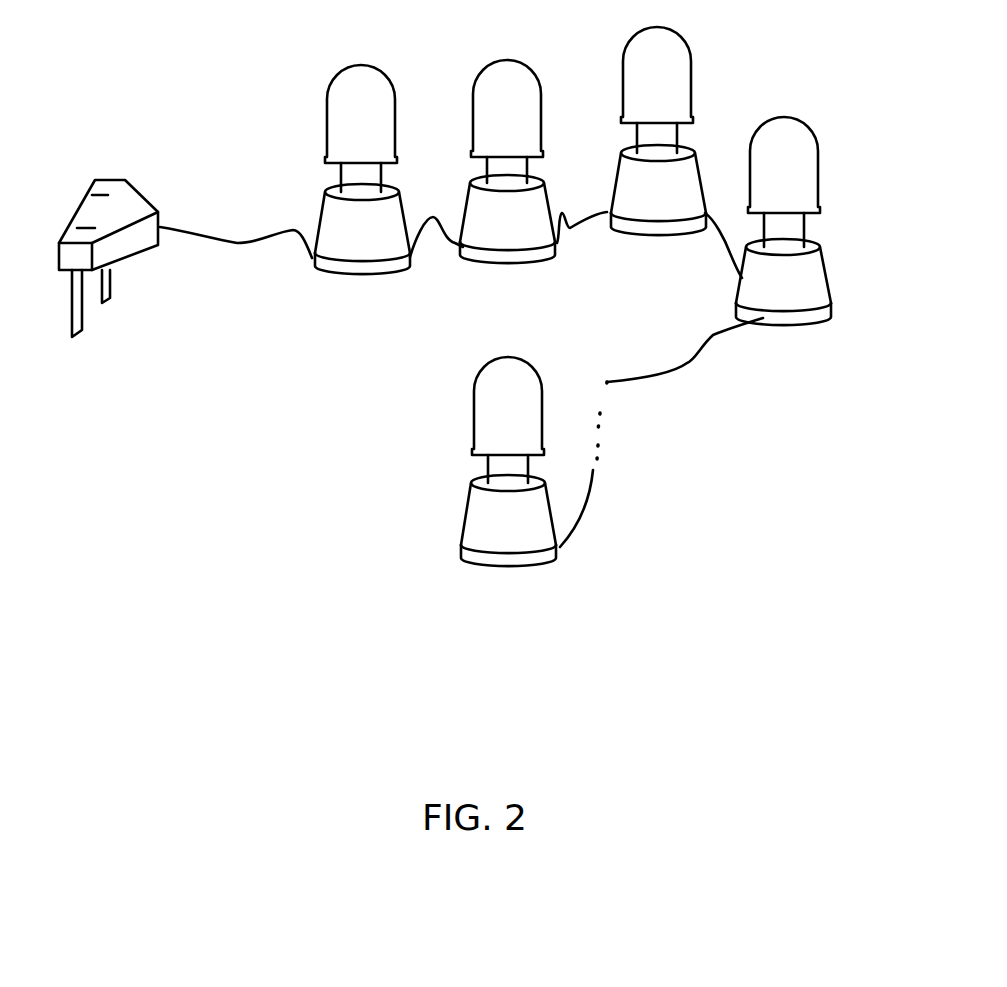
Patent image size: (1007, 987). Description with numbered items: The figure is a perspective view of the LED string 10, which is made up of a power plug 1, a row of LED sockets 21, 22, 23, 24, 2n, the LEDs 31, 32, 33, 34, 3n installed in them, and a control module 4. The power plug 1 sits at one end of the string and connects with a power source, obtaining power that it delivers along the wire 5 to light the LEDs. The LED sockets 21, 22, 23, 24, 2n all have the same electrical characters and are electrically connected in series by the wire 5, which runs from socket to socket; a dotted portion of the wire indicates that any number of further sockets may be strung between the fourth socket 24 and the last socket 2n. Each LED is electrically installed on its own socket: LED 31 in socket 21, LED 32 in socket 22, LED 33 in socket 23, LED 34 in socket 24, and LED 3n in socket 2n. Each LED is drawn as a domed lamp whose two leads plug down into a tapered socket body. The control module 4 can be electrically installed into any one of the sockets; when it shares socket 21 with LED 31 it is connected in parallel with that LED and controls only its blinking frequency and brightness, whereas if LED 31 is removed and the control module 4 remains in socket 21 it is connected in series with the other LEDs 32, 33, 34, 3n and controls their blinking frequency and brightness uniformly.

The LED string 10 is at (205, 102).
The power plug 1 is at (130, 203).
The wire 5 is at (205, 237).
The control module 4 is at (372, 262).
The LED socket 21 is at (317, 227).
The LED socket 22 is at (503, 230).
The LED socket 23 is at (680, 177).
The LED socket 24 is at (800, 273).
The LED socket 2n is at (507, 523).
The LED 31 is at (372, 123).
The LED 32 is at (517, 113).
The LED 33 is at (658, 80).
The LED 34 is at (795, 168).
The LED 3n is at (522, 430).